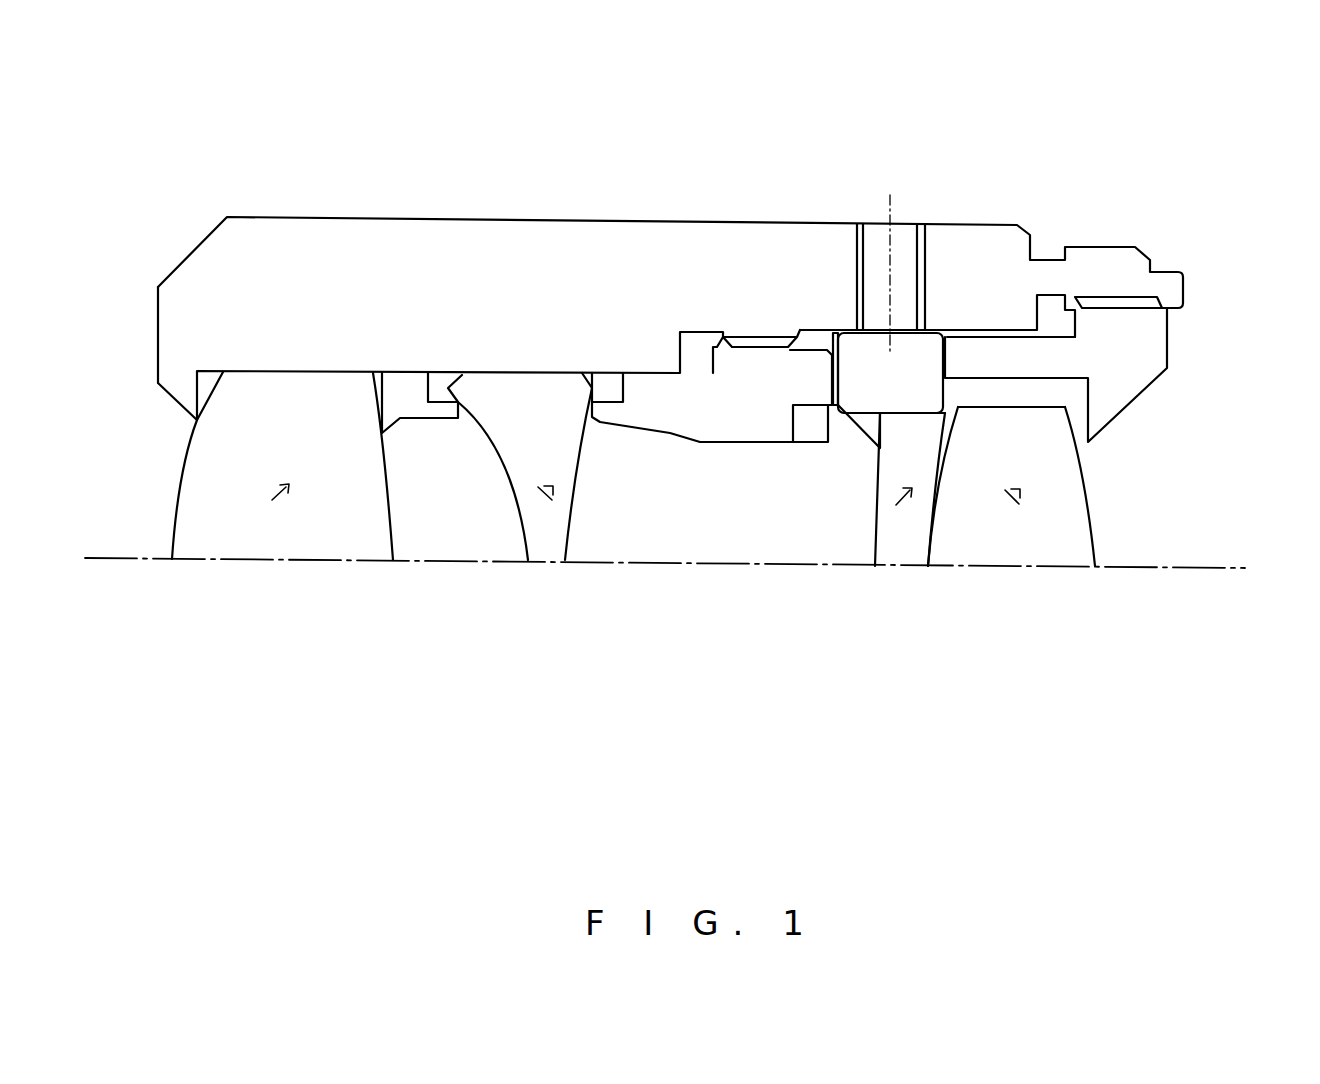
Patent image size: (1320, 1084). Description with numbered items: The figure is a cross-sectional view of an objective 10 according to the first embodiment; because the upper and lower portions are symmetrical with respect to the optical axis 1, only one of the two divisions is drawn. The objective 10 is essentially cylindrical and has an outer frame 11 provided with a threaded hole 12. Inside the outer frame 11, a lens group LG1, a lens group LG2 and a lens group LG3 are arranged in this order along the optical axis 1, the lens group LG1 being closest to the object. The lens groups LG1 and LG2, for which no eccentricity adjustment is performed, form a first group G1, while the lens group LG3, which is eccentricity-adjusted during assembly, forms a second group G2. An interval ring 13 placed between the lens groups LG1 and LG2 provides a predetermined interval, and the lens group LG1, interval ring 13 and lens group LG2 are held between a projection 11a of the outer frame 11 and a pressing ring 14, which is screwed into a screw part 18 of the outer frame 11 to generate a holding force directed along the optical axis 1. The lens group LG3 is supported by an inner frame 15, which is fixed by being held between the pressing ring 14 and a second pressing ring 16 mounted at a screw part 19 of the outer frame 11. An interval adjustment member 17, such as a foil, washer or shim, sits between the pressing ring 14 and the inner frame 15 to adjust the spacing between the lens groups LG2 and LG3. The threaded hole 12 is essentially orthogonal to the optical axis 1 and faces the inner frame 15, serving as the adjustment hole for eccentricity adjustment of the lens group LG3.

The optical axis 1 is at (1250, 566).
The objective 10 is at (1238, 130).
The outer frame 11 is at (205, 265).
The projection 11a is at (185, 392).
The threaded hole 12 is at (900, 232).
The interval ring 13 is at (423, 407).
The pressing ring 14 is at (706, 418).
The inner frame 15 is at (862, 418).
The pressing ring 16 is at (1125, 385).
The interval adjustment member 17 is at (832, 378).
The screw part 18 is at (765, 343).
The screw part 19 is at (1130, 303).
The lens group LG1 is at (347, 532).
The lens group LG2 is at (552, 533).
The lens group LG3 is at (978, 545).
The first group G1 is at (563, 630).
The second group G2 is at (1012, 633).